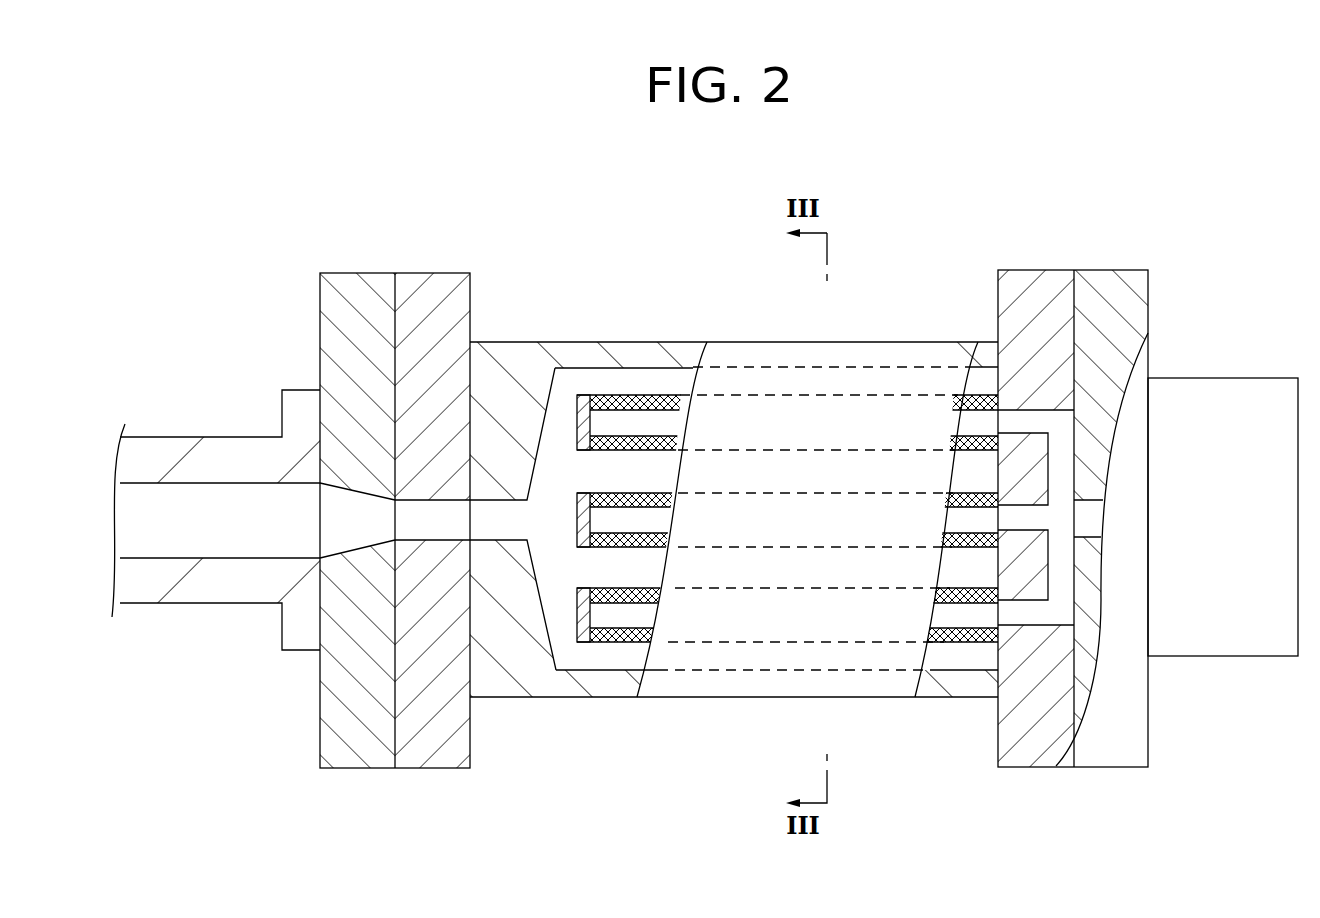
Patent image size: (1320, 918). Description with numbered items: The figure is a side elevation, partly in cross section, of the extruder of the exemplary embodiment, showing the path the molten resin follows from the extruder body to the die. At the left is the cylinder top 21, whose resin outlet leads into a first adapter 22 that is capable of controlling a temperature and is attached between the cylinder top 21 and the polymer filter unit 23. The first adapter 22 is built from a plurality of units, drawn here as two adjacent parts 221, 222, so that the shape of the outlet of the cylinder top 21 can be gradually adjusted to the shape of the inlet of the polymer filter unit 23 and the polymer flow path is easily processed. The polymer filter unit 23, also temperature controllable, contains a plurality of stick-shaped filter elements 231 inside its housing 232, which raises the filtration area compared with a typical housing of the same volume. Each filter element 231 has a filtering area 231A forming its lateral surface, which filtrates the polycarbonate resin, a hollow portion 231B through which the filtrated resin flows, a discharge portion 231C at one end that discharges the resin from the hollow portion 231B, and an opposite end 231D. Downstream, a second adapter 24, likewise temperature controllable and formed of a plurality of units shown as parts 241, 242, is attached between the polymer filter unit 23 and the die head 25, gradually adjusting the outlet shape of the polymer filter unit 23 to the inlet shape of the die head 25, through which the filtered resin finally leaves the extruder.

The cylinder top 21 is at (166, 446).
The first adapter 22 is at (457, 207).
The first bearing inner member 221 is at (371, 277).
The first bearing outer member 222 is at (431, 277).
The polymer filter unit 23 is at (565, 343).
The stick-shaped filter element 231 is at (612, 657).
The filtering area 231A is at (650, 396).
The hollow portion 231B is at (642, 425).
The discharge portion 231C is at (975, 412).
The end of the filter element 231D is at (577, 425).
The housing 232 is at (632, 368).
The second adapter 24 is at (1122, 204).
The second bearing inner member 241 is at (1038, 270).
The second bearing outer member 242 is at (1105, 270).
The die head 25 is at (1238, 378).